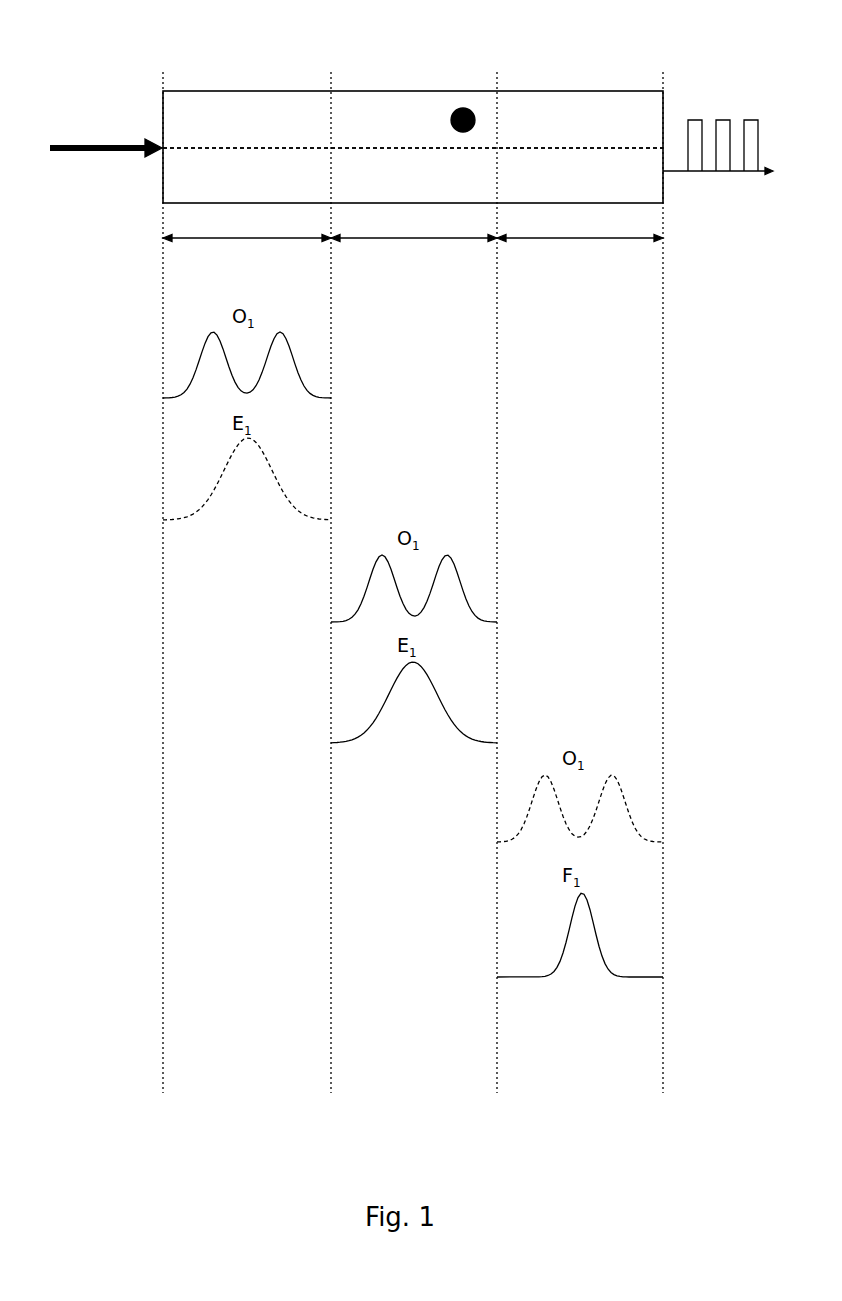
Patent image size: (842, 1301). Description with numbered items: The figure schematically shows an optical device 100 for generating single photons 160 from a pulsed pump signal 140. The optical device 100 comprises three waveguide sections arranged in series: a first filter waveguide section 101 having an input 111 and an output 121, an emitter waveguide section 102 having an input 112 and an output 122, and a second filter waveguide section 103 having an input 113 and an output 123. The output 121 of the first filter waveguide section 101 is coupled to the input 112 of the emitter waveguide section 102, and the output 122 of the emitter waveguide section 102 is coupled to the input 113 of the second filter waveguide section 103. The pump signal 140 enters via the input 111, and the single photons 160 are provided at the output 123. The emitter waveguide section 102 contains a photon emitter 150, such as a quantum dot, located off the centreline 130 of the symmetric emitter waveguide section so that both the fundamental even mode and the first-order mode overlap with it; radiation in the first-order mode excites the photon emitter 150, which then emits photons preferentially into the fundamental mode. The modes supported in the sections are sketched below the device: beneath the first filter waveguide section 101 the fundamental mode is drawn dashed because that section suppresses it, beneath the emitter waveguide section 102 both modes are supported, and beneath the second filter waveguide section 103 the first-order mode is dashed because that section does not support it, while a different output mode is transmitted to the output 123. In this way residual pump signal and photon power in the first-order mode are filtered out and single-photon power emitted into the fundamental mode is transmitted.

The optical device 100 is at (92, 20).
The first filter waveguide section 101 is at (247, 255).
The emitter waveguide section 102 is at (414, 255).
The second filter waveguide section 103 is at (580, 255).
The input of the first filter waveguide section 111 is at (165, 117).
The input of the emitter waveguide section 112 is at (333, 117).
The input of the second filter waveguide section 113 is at (499, 117).
The output of the first filter waveguide section 121 is at (331, 190).
The output of the emitter waveguide section 122 is at (497, 190).
The output of the second filter waveguide section 123 is at (663, 190).
The centreline 130 is at (207, 156).
The pump signal 140 is at (95, 142).
The photon emitter 150 is at (467, 108).
The single photons 160 is at (718, 92).